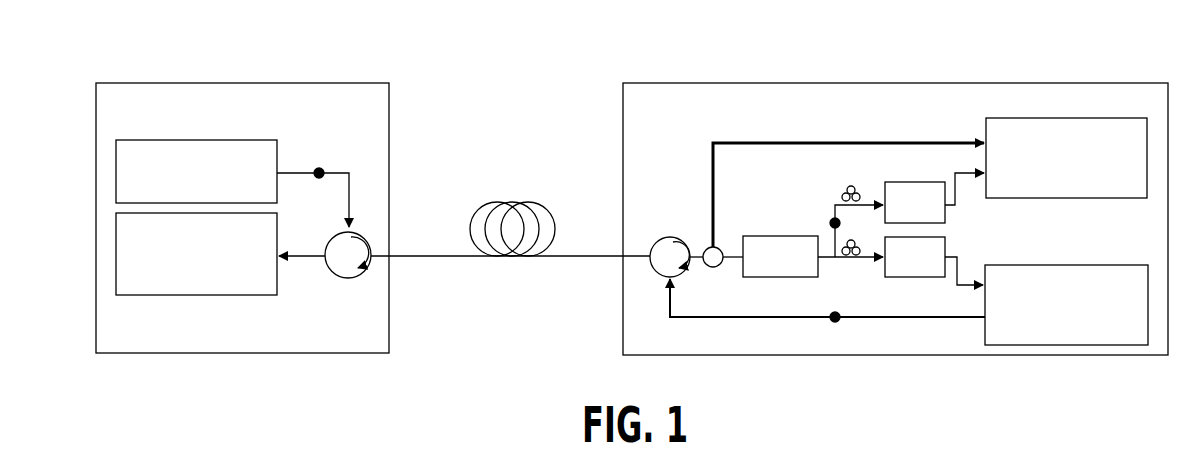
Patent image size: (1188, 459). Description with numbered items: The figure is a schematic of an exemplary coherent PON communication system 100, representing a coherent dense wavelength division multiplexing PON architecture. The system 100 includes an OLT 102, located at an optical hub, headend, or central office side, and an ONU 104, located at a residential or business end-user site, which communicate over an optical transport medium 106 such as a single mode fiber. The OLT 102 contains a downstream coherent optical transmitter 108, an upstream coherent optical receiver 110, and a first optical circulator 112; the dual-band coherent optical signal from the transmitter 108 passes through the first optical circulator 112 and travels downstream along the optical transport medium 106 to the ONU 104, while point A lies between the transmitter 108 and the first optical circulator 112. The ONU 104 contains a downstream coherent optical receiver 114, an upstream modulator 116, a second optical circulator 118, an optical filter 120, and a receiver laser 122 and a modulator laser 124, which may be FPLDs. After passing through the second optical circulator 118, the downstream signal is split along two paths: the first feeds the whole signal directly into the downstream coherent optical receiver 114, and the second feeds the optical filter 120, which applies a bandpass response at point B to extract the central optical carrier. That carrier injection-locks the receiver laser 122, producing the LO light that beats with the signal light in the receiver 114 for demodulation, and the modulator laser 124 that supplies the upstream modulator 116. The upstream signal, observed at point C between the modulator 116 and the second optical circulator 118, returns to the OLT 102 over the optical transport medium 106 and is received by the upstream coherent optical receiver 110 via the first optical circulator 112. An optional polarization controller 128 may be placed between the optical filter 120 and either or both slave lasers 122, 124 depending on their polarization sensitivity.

The coherent PON communication system 100 is at (178, 66).
The OLT 102 is at (257, 341).
The ONU 104 is at (682, 129).
The optical transport medium 106 is at (530, 258).
The downstream coherent optical transmitter 108 is at (180, 140).
The upstream coherent optical receiver 110 is at (208, 295).
The first optical circulator 112 is at (348, 280).
The downstream coherent optical receiver 114 is at (1068, 118).
The upstream modulator 116 is at (1085, 265).
The second optical circulator 118 is at (670, 237).
The optical filter 120 is at (768, 236).
The receiver laser 122 is at (888, 182).
The modulator laser 124 is at (892, 277).
The polarization controller 128 is at (842, 195).